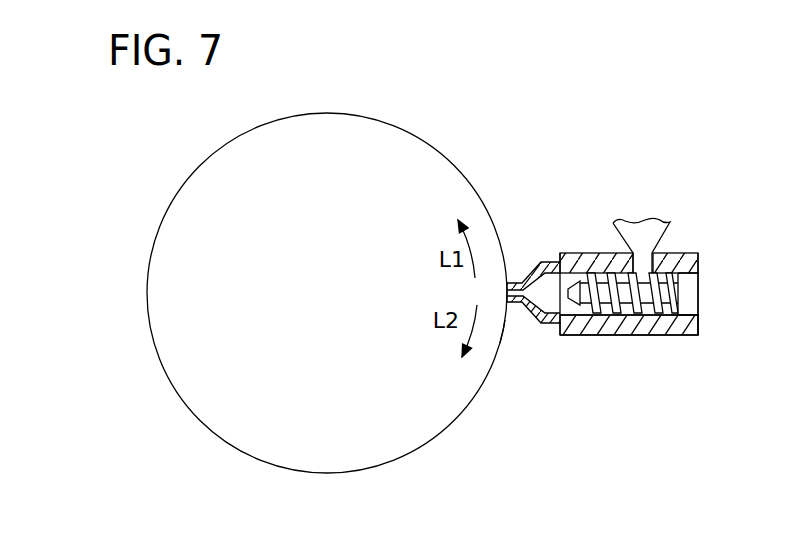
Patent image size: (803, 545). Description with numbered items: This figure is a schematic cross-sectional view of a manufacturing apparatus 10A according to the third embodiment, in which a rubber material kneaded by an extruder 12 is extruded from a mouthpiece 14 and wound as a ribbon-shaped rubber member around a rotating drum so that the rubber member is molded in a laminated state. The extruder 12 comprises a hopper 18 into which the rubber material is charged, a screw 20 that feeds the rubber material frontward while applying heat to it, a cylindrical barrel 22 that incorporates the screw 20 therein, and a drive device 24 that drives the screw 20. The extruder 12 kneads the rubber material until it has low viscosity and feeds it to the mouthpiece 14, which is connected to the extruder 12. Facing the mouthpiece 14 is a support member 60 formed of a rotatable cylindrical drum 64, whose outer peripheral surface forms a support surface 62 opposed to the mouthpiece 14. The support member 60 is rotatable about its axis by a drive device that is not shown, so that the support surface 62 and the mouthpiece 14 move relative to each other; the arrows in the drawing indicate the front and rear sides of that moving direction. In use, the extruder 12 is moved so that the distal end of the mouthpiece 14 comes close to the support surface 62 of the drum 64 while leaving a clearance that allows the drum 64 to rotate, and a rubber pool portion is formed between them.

The manufacturing apparatus 10A is at (552, 77).
The extruder 12 is at (640, 335).
The mouthpiece 14 is at (512, 283).
The hopper 18 is at (627, 230).
The screw 20 is at (603, 305).
The cylindrical barrel 22 is at (673, 328).
The drive device 24 is at (693, 285).
The support member 60 is at (327, 317).
The support surface 62 is at (500, 343).
The drum 64 is at (252, 438).